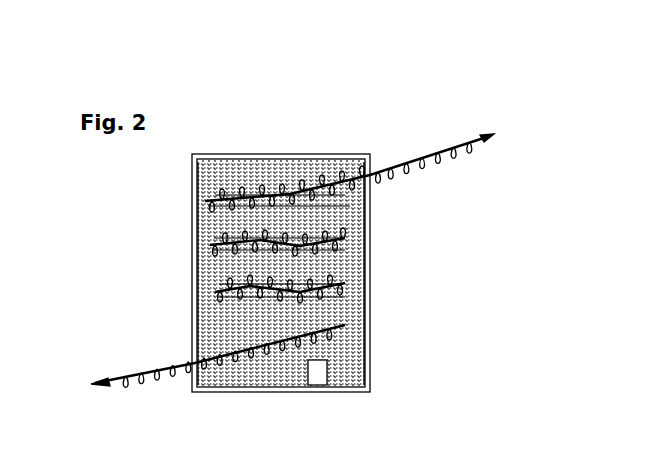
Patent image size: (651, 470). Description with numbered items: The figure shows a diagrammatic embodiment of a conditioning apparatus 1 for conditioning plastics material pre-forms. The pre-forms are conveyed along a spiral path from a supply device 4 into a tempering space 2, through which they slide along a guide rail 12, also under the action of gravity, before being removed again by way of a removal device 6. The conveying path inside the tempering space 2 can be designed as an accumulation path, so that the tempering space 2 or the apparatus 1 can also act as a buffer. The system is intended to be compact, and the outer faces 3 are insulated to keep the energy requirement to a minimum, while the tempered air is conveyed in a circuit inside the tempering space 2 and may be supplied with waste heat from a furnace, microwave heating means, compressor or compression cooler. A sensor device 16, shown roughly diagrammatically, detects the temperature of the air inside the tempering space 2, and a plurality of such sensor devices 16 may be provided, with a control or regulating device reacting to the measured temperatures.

The conditioning apparatus 1 is at (313, 148).
The tempering space 2 is at (330, 356).
The outer faces 3 is at (370, 283).
The supply device 4 is at (370, 186).
The removal device 6 is at (186, 363).
The guide rail 12 is at (222, 194).
The sensor device 16 is at (328, 386).